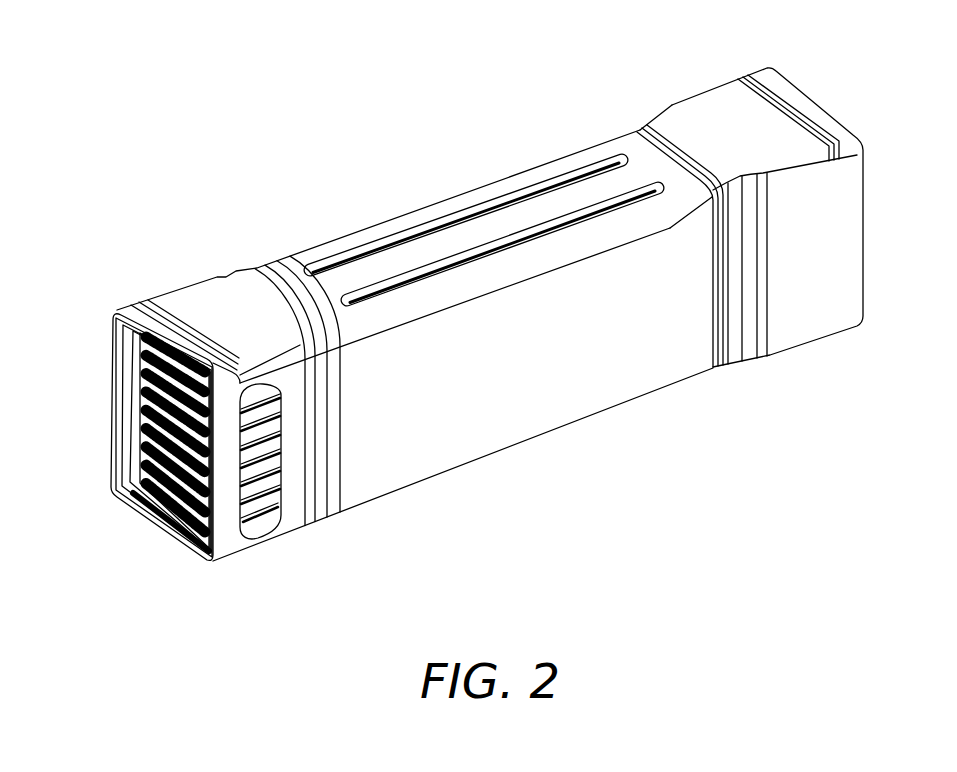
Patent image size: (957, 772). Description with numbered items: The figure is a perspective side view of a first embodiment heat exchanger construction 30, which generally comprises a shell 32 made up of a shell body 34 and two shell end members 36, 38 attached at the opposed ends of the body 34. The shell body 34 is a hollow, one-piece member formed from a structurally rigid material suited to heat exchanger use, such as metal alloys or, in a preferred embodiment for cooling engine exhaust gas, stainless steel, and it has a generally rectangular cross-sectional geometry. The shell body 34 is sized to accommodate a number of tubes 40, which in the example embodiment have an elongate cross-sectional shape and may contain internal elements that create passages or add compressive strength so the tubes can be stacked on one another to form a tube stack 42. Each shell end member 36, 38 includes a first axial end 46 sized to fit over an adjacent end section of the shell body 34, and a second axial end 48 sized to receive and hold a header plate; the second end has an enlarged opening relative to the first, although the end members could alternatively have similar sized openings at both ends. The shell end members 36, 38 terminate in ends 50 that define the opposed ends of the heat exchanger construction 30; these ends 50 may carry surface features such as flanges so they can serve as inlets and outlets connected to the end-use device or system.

The heat exchanger construction 30 is at (474, 296).
The shell 32 is at (471, 178).
The shell body 34 is at (530, 428).
The shell end member 36 is at (206, 288).
The shell end member 38 is at (713, 100).
The tubes 40 is at (268, 487).
The tube stack 42 is at (260, 527).
The first axial end 46 is at (283, 282).
The second axial end 48 is at (152, 524).
The ends 50 is at (99, 403).